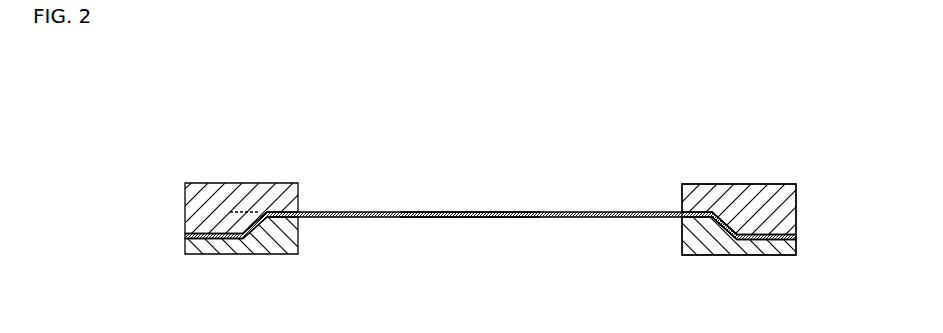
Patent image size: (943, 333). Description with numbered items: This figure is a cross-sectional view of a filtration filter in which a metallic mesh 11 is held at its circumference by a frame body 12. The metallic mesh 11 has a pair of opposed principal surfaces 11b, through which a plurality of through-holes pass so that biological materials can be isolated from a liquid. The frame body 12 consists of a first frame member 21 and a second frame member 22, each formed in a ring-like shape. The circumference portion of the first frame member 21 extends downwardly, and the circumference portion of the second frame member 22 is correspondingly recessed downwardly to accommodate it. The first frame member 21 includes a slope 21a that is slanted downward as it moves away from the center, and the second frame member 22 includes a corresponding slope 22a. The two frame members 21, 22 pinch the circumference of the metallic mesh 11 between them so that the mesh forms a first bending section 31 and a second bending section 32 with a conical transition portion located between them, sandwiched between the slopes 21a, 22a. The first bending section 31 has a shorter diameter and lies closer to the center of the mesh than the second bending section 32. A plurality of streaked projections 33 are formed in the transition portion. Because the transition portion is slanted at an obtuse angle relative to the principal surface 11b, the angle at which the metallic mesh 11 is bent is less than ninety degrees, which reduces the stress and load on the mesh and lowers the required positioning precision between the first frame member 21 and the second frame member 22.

The frame body 12 is at (195, 223).
The first frame member 21 is at (185, 218).
The second frame member 22 is at (185, 247).
The metallic mesh 11 is at (490, 163).
The principal surface 11b is at (556, 212).
The first bending section 31 is at (712, 206).
The second bending section 32 is at (770, 196).
The streaked projection 33 is at (733, 224).
The slope 21a is at (738, 228).
The slope 22a is at (722, 240).